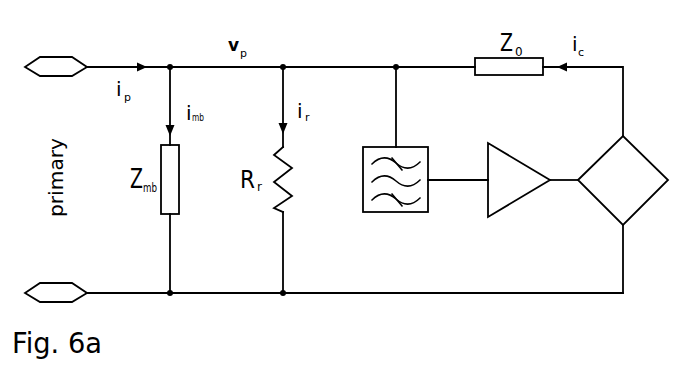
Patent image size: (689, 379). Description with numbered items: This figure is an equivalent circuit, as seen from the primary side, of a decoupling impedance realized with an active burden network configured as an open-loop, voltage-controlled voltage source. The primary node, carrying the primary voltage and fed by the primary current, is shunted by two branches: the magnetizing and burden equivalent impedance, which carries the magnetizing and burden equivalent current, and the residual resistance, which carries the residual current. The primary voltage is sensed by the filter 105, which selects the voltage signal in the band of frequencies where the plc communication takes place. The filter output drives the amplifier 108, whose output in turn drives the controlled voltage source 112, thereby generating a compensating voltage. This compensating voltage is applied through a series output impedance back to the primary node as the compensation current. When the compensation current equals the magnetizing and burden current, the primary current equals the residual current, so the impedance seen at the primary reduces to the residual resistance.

The filter 105 is at (364, 212).
The amplifier 108 is at (532, 184).
The controlled voltage source 112 is at (605, 163).